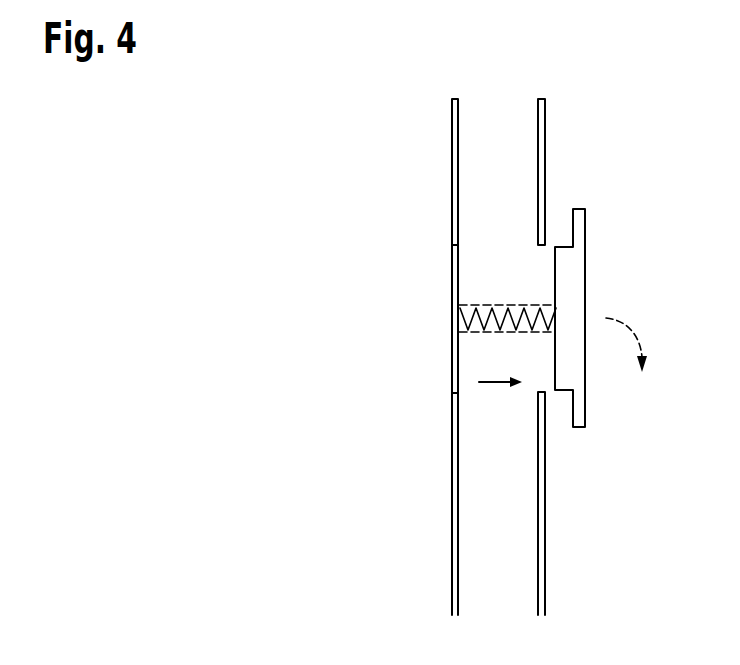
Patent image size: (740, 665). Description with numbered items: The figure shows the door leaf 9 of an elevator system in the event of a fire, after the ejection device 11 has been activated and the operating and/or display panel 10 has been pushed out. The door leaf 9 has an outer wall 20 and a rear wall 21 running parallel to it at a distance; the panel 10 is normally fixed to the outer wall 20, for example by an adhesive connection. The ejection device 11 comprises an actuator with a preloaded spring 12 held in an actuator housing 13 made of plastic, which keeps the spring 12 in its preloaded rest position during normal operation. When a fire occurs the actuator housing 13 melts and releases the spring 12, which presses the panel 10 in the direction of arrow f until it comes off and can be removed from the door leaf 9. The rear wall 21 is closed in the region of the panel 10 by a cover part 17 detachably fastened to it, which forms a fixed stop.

The door leaf 9 is at (352, 150).
The operating and/or display panel 10 is at (604, 219).
The ejection device 11 is at (481, 298).
The spring 12 is at (485, 330).
The actuator housing 13 is at (502, 334).
The cover part 17 is at (456, 297).
The outer wall 20 is at (542, 571).
The rear wall 21 is at (454, 572).